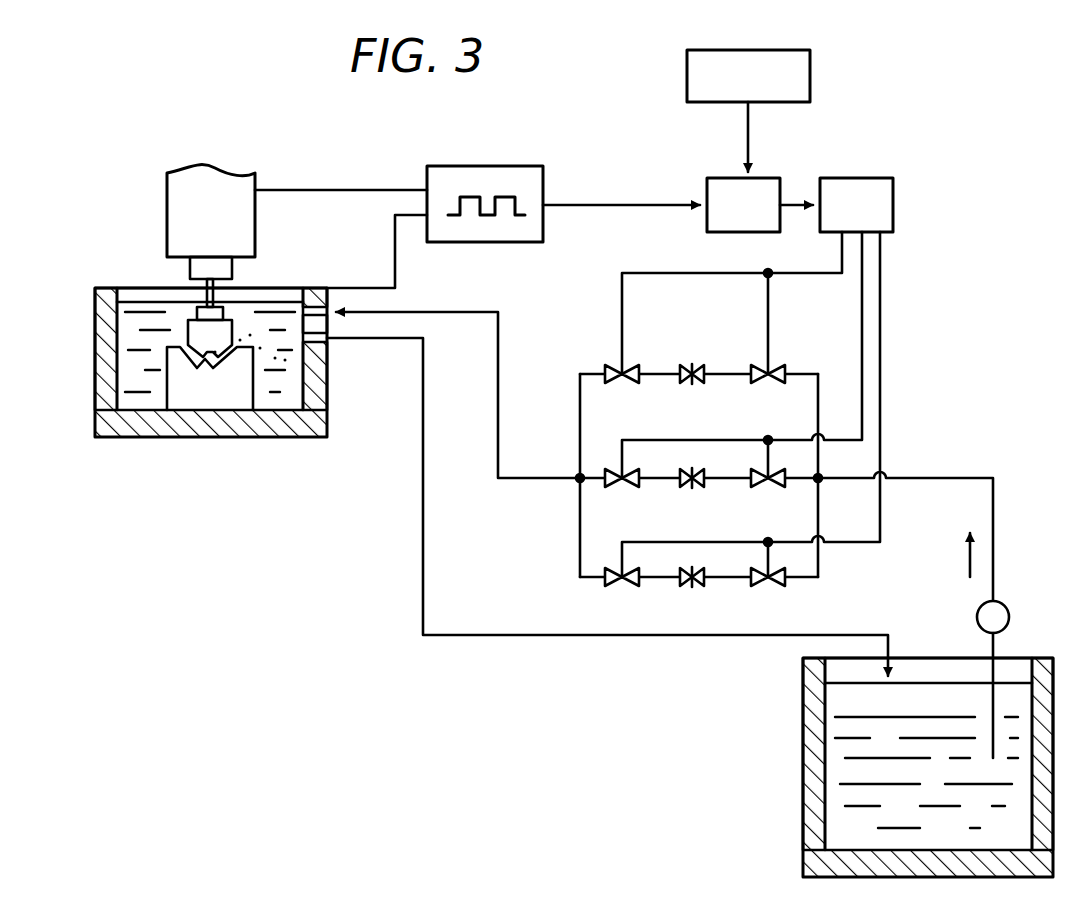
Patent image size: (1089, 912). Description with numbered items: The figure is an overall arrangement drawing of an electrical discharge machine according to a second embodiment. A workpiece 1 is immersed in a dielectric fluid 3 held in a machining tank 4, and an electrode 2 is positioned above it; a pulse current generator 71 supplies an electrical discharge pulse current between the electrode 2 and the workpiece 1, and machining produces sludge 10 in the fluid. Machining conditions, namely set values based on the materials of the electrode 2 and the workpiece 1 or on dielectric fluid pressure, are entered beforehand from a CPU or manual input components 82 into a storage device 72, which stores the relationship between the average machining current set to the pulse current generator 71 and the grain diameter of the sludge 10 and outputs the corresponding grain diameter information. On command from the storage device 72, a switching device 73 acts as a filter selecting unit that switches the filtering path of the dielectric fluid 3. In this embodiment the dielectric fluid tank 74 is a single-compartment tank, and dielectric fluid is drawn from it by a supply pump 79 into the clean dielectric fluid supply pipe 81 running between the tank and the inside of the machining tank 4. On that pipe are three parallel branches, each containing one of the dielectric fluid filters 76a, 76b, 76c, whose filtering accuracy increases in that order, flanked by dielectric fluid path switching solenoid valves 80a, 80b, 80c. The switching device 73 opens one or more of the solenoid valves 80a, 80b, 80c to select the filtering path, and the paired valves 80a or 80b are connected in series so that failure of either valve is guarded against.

The workpiece 1 is at (178, 380).
The electrode 2 is at (235, 330).
The dielectric fluid 3 is at (132, 297).
The machining tank 4 is at (96, 324).
The sludge 10 is at (290, 378).
The pulse current generator 71 is at (483, 166).
The storage device 72 is at (743, 205).
The switching device 73 is at (856, 205).
The dielectric fluid tank 74 is at (803, 682).
The dielectric fluid filter 76a is at (692, 384).
The dielectric fluid filter 76b is at (692, 488).
The dielectric fluid filter 76c is at (692, 587).
The supply pump 79 is at (1010, 612).
The dielectric fluid path switching solenoid valve 80a is at (622, 384).
The dielectric fluid path switching solenoid valve 80b is at (622, 488).
The dielectric fluid path switching solenoid valve 80c is at (622, 587).
The clean dielectric fluid supply pipe 81 is at (515, 480).
The CPU or manual input components 82 is at (812, 62).